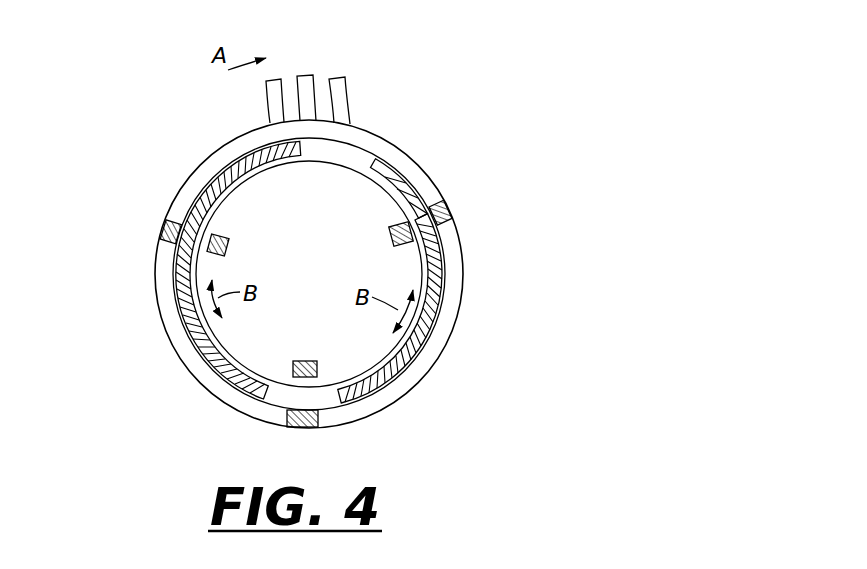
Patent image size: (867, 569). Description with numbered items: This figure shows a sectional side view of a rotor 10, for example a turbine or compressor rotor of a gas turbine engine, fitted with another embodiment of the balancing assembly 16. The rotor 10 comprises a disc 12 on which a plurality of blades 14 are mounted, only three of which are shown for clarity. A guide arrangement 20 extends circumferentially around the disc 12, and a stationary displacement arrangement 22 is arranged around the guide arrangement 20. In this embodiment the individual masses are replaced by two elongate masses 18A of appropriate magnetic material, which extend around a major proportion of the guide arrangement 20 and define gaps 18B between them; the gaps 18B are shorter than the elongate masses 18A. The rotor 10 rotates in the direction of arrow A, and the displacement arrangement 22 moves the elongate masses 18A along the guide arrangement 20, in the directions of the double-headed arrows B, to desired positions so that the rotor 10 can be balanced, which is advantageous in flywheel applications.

The rotor 10 is at (450, 412).
The disc 12 is at (253, 338).
The blades 14 is at (313, 70).
The balancing assembly 16 is at (152, 225).
The elongate masses 18A is at (190, 309).
The gaps 18B is at (340, 148).
The guide arrangement 20 is at (405, 160).
The displacement arrangement 22 is at (467, 207).